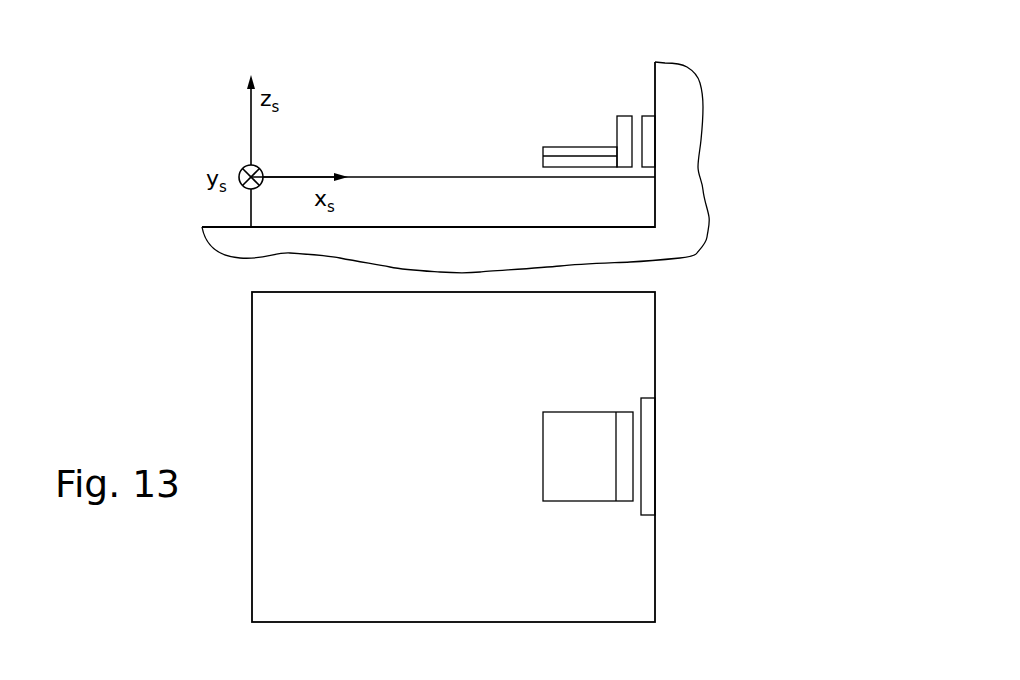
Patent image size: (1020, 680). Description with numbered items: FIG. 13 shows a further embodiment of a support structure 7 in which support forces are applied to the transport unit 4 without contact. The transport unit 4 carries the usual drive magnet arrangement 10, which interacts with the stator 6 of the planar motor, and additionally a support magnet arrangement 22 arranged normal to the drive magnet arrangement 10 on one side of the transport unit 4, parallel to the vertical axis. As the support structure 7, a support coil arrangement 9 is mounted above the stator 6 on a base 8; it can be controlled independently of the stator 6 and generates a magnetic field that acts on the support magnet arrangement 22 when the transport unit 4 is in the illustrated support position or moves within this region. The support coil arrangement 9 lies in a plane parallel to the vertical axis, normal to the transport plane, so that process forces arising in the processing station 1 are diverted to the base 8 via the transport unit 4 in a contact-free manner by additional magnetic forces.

The processing station 1 is at (748, 142).
The transport unit 4 is at (578, 152).
The stator 6 is at (425, 205).
The support structure 7 is at (639, 93).
The base 8 is at (685, 203).
The support coil arrangement 9 is at (648, 137).
The drive magnet arrangement 10 is at (555, 164).
The support magnet arrangement 22 is at (626, 137).